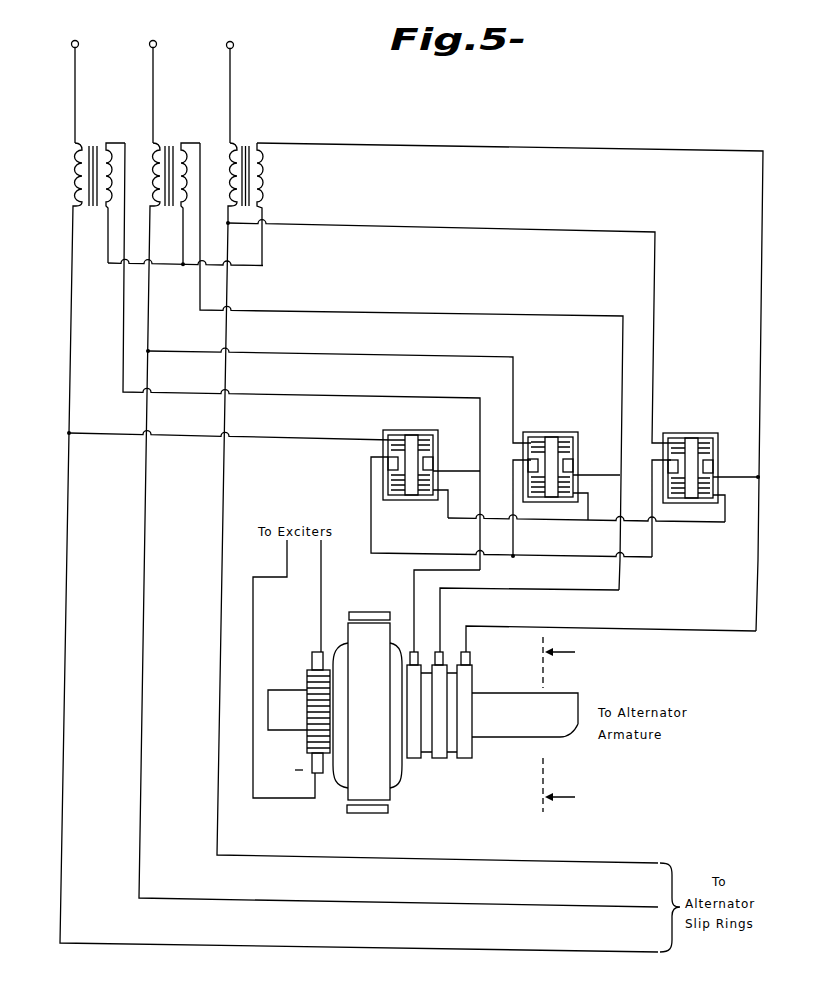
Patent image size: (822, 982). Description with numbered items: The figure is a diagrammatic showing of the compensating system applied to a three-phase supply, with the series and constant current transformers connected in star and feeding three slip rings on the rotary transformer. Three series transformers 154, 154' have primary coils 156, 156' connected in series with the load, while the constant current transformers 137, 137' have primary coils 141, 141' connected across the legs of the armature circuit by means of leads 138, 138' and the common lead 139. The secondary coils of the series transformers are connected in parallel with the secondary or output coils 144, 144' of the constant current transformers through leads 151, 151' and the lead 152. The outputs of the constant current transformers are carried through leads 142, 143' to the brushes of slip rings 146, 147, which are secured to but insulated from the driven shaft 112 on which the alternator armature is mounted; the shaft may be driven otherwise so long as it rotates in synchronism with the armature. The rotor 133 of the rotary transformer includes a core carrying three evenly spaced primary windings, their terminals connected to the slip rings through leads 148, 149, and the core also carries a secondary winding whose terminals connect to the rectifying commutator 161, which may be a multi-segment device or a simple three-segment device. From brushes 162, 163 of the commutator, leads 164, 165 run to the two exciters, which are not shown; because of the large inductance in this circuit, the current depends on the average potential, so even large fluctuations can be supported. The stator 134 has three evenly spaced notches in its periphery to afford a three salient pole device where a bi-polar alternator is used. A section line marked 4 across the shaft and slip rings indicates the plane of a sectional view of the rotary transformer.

The driven shaft 112 is at (544, 727).
The rotor 133 is at (384, 710).
The stator 134 is at (369, 612).
The constant current transformer 137 is at (405, 453).
The constant current transformer 137' is at (550, 454).
The lead 138 is at (230, 454).
The lead 138' is at (339, 387).
The lead 139 is at (534, 557).
The primary coil 141 is at (436, 451).
The primary coil 141' is at (578, 454).
The lead 142 is at (413, 575).
The lead 143' is at (529, 620).
The secondary coil 144 is at (436, 496).
The secondary coil 144' is at (569, 508).
The slip ring 146 is at (413, 760).
The slip ring 147 is at (453, 724).
The lead 148 is at (398, 645).
The lead 149 is at (363, 715).
The lead 151 is at (301, 356).
The lead 151' is at (411, 366).
The lead 152 is at (165, 268).
The series transformer 154 is at (107, 182).
The series transformer 154' is at (185, 183).
The primary coil 156 is at (340, 547).
The primary coil 156' is at (398, 525).
The rectifying commutator 161 is at (302, 686).
The brush 162 is at (319, 652).
The brush 163 is at (312, 764).
The lead 164 is at (322, 592).
The lead 165 is at (254, 605).
The section line 4 is at (567, 724).